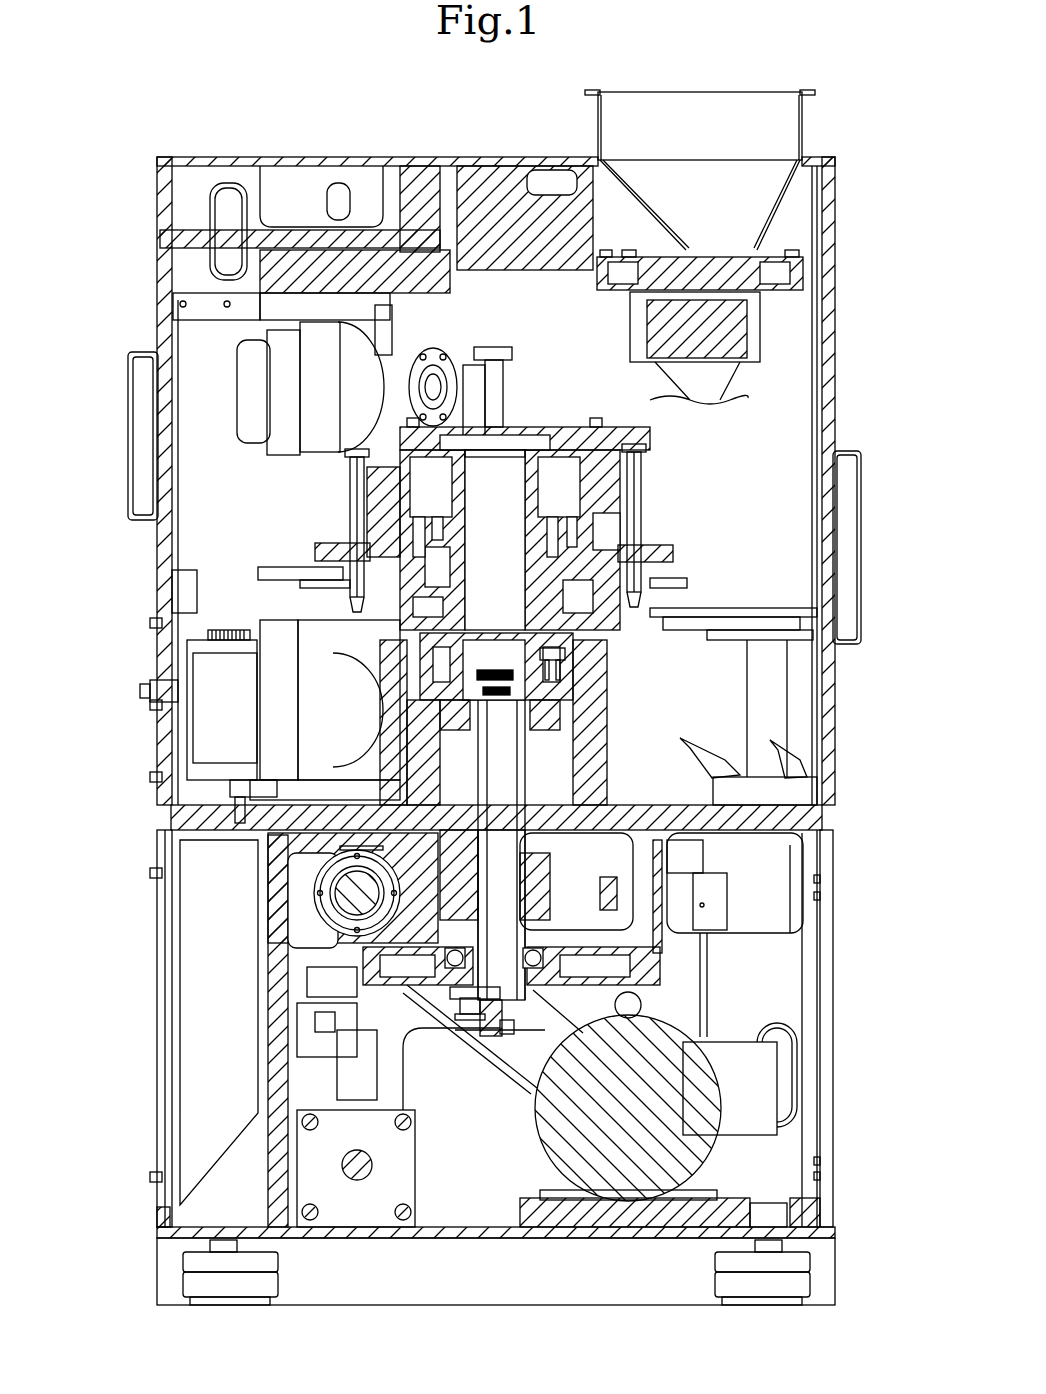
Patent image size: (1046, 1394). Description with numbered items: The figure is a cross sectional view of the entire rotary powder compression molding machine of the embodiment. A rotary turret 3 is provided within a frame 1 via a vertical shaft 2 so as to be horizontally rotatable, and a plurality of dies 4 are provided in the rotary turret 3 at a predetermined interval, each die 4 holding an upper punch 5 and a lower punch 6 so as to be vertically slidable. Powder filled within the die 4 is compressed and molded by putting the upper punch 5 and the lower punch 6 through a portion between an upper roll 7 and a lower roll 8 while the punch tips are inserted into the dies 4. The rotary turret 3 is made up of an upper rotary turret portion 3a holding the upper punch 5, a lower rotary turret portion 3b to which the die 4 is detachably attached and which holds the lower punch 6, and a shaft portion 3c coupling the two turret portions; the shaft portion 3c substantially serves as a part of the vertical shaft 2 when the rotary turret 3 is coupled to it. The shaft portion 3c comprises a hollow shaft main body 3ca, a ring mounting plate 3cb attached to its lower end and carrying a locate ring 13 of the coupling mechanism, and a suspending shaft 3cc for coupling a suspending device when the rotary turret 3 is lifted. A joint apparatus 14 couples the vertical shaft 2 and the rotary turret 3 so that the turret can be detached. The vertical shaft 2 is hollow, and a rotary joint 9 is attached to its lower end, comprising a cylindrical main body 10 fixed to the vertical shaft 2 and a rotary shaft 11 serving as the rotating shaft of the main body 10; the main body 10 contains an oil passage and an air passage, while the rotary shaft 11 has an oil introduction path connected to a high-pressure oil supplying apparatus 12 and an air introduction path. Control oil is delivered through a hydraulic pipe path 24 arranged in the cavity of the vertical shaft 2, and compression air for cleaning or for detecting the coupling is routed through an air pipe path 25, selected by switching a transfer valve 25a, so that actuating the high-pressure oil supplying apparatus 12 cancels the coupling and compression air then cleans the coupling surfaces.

The frame 1 is at (845, 716).
The vertical shaft 2 is at (536, 933).
The rotary turret 3 is at (482, 575).
The upper rotary turret portion 3a is at (400, 468).
The lower rotary turret portion 3b is at (350, 560).
The shaft portion 3c is at (520, 390).
The shaft main body 3ca is at (522, 410).
The ring mounting plate 3cb is at (165, 688).
The suspending shaft 3cc is at (492, 345).
The die 4 is at (350, 548).
The upper punch 5 is at (347, 455).
The lower punch 6 is at (215, 635).
The upper roll 7 is at (350, 350).
The lower roll 8 is at (350, 716).
The rotary joint 9 is at (505, 1050).
The cylindrical main body 10 is at (478, 1010).
The rotary shaft 11 is at (490, 1040).
The high-pressure oil supplying apparatus 12 is at (378, 1182).
The locate ring 13 is at (565, 655).
The joint apparatus 14 is at (556, 693).
The hydraulic pipe path 24 is at (470, 950).
The air pipe path 25 is at (385, 848).
The transfer valve 25a is at (612, 772).